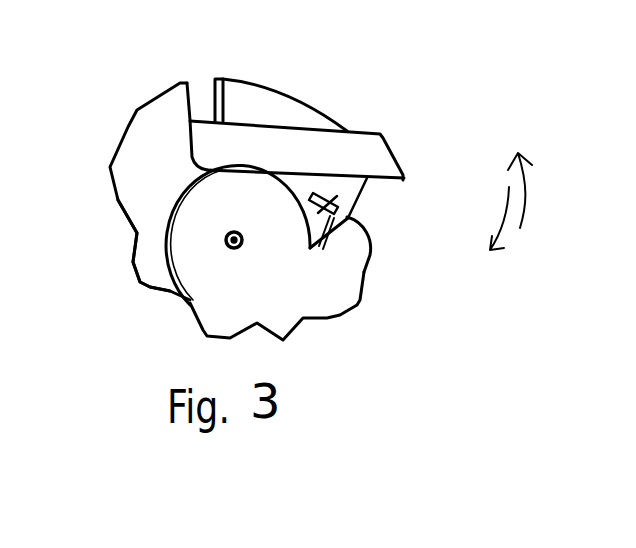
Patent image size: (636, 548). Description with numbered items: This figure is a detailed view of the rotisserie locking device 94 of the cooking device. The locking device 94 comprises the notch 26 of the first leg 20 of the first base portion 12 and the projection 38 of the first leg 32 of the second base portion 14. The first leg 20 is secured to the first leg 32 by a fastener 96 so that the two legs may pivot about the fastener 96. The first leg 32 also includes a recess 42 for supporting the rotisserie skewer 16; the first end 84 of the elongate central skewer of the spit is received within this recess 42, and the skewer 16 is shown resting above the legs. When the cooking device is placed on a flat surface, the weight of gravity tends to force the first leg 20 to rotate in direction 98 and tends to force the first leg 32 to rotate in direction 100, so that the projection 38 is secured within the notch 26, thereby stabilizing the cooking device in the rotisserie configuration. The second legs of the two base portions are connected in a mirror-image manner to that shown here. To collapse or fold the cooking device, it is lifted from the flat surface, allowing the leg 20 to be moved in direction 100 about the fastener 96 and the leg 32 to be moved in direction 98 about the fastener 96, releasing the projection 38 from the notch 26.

The first base portion 12 is at (340, 293).
The second base portion 14 is at (145, 263).
The skewer 16 is at (320, 148).
The first leg 20 is at (350, 268).
The notch 26 is at (367, 246).
The first leg 32 is at (132, 182).
The projection 38 is at (360, 193).
The recess 42 is at (200, 108).
The first end 84 is at (275, 140).
The locking device 94 is at (445, 137).
The fastener 96 is at (239, 248).
The direction 98 is at (528, 200).
The direction 100 is at (508, 242).